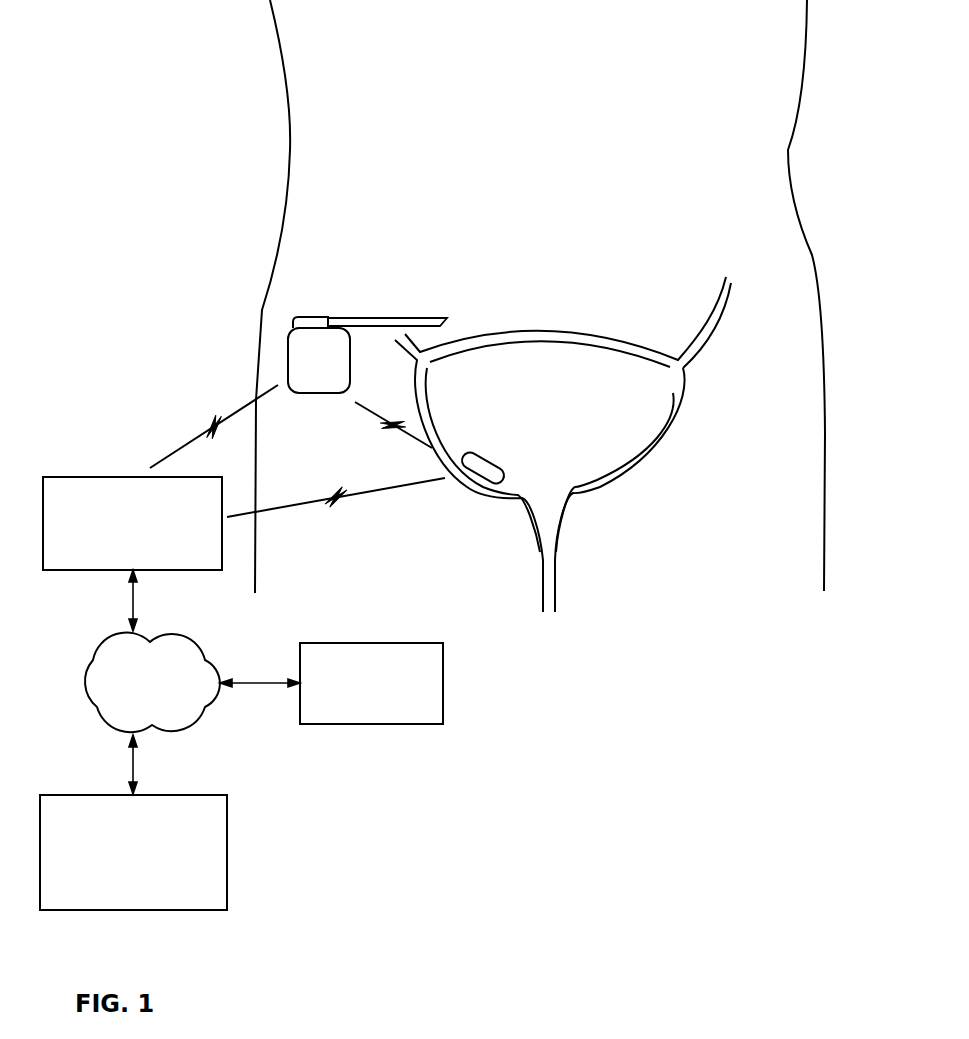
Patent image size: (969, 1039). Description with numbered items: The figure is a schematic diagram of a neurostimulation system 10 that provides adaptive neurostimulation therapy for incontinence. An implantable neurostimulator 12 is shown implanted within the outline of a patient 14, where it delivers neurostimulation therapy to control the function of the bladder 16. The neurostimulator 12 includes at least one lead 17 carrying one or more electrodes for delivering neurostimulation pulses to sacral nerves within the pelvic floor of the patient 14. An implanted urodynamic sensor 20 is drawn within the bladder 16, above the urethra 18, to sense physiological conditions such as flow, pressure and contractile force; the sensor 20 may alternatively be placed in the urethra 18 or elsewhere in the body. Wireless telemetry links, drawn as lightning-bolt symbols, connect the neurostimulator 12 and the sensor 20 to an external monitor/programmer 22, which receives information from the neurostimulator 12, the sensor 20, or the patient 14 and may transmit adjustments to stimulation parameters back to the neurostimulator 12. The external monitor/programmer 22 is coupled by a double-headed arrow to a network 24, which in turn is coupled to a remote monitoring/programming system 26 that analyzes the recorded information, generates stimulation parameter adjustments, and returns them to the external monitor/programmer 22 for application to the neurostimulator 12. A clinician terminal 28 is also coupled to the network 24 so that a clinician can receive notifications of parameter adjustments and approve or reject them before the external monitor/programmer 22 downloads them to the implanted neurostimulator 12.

The neurostimulation system 10 is at (173, 268).
The implantable neurostimulator 12 is at (307, 317).
The patient 14 is at (764, 163).
The bladder 16 is at (597, 336).
The lead 17 is at (407, 320).
The urethra 18 is at (542, 597).
The urodynamic sensor 20 is at (480, 455).
The external monitor/programmer 22 is at (130, 477).
The network 24 is at (173, 631).
The remote monitoring/programming system 26 is at (218, 795).
The clinician terminal 28 is at (373, 724).